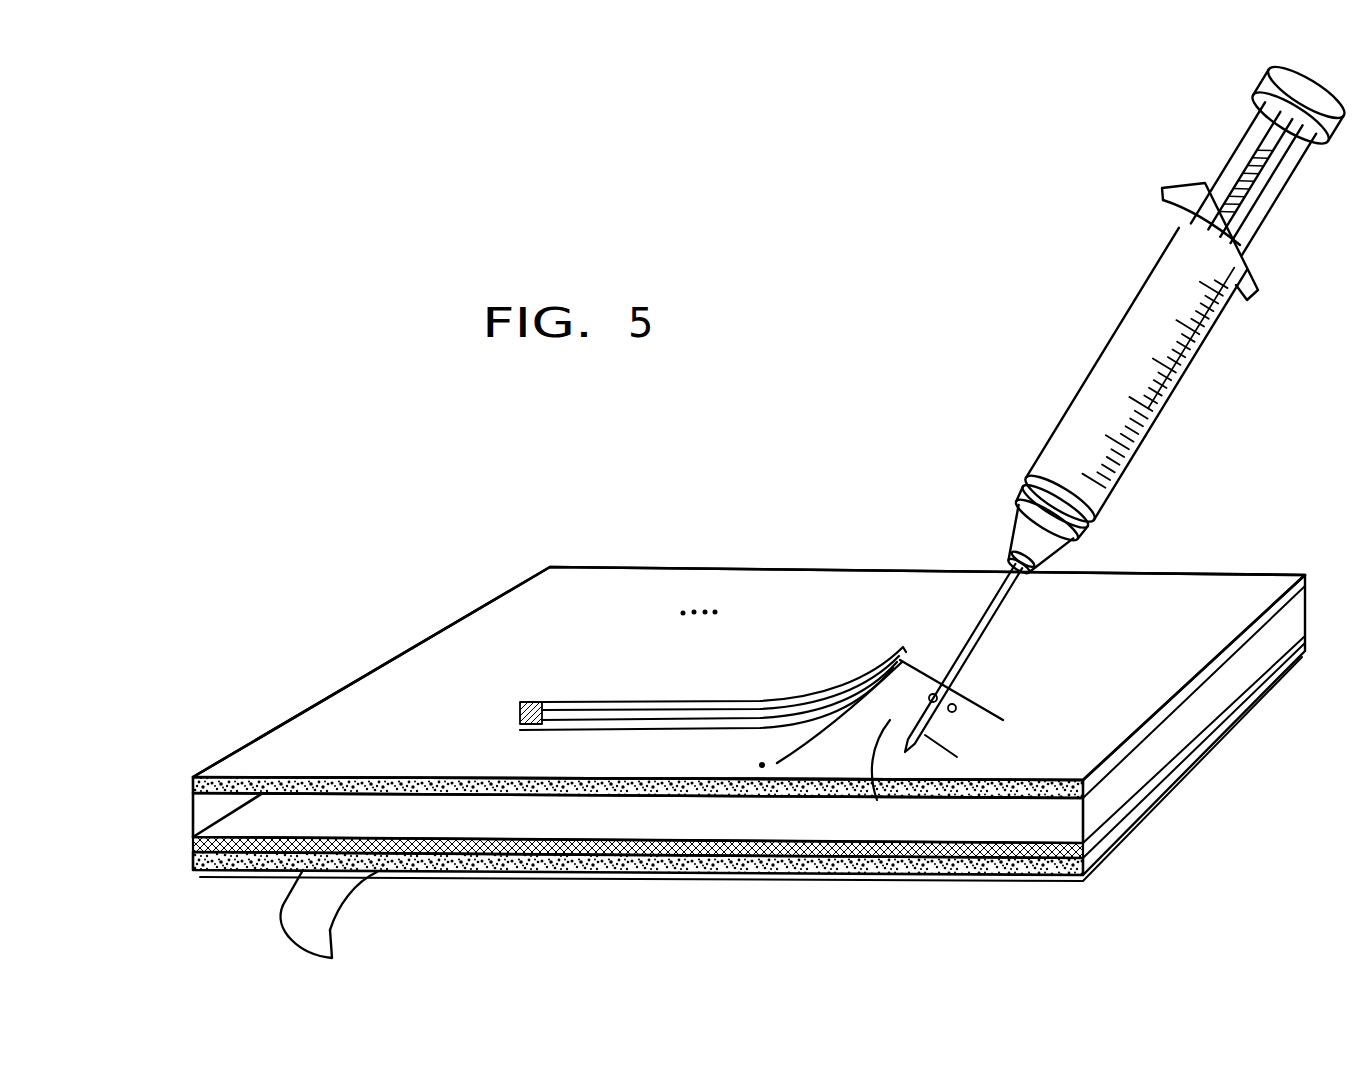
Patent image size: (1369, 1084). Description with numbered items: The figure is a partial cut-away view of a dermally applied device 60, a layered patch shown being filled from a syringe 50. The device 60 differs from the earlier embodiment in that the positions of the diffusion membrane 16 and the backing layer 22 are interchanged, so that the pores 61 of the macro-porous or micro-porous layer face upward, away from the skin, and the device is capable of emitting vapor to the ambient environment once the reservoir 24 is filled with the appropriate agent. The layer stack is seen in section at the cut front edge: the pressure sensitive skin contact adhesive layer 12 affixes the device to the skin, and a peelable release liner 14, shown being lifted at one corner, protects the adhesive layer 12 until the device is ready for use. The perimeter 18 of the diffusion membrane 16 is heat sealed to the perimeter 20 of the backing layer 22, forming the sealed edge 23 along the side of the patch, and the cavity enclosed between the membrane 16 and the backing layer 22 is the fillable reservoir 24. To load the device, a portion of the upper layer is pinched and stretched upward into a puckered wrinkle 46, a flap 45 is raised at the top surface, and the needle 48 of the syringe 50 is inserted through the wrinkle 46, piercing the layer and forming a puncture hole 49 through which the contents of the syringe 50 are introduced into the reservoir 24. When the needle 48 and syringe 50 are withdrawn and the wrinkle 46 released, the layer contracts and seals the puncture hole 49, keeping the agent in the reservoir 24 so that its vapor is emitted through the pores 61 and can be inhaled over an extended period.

The pressure sensitive skin contact adhesive layer 12 is at (250, 868).
The release liner 14 is at (322, 938).
The diffusion membrane 16 is at (498, 638).
The perimeter of diffusion membrane 18 is at (193, 778).
The perimeter of backing layer 20 is at (193, 848).
The backing layer 22 is at (605, 872).
The sealed edge 23 is at (193, 820).
The fillable reservoir 24 is at (562, 822).
The flap 45 is at (777, 700).
The puckered wrinkle 46 is at (877, 800).
The needle 48 is at (963, 640).
The puncture hole 49 is at (1003, 720).
The syringe 50 is at (1178, 392).
The dermally applied device 60 is at (512, 543).
The pores 61 is at (697, 610).